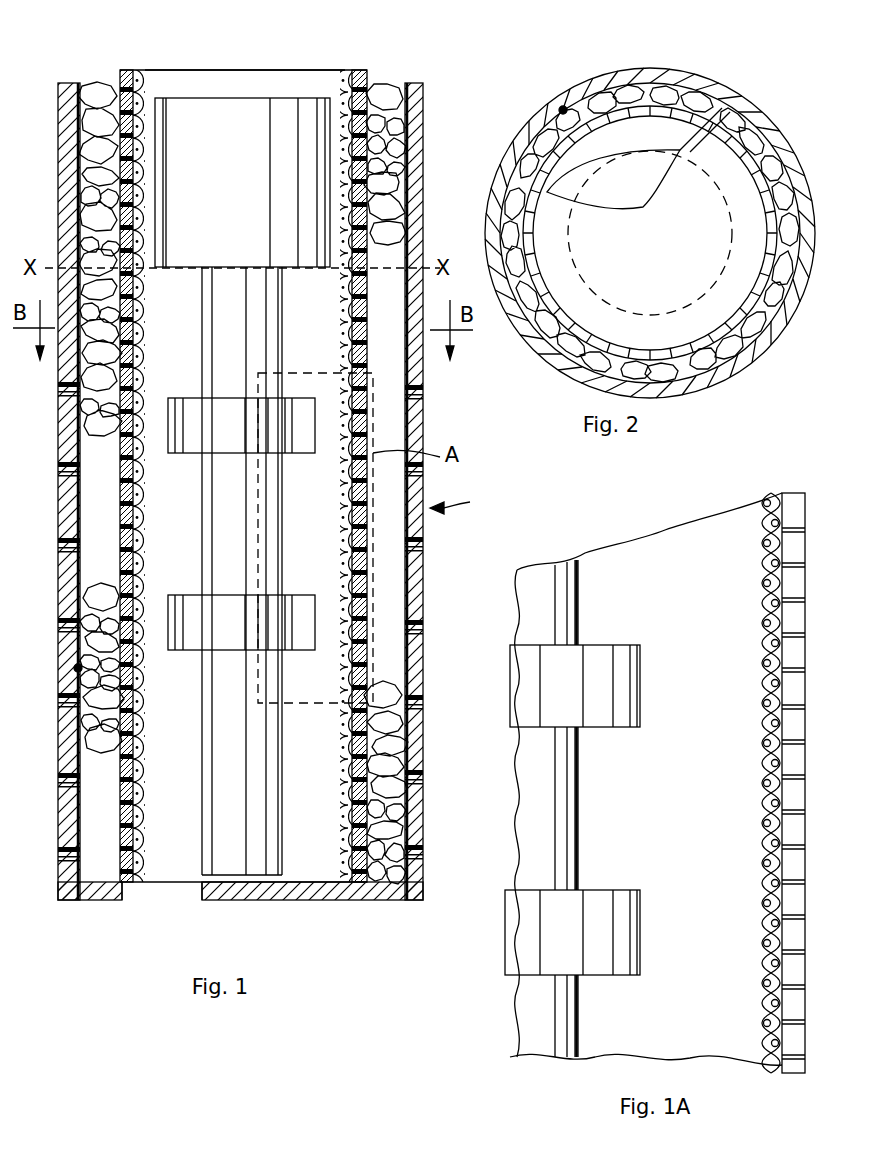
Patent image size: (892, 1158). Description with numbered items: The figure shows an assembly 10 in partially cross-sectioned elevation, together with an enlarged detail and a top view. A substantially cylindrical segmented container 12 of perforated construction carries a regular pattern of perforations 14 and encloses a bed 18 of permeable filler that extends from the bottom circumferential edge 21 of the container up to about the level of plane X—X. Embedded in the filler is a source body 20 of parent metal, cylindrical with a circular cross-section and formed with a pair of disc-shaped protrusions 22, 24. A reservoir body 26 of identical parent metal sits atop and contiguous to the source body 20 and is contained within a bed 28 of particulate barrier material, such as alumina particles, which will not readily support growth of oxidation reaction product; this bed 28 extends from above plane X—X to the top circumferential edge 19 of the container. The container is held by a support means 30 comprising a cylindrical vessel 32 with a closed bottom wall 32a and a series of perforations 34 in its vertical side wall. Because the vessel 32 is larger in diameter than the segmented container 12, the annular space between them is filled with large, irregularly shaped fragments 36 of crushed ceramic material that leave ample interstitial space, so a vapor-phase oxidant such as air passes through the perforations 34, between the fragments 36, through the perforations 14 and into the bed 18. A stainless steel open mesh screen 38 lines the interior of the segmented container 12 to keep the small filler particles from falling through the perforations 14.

In FIG. 1, the assembly 10 is at (462, 502).
In FIG. 1, the segmented container 12 is at (368, 345).
In FIG. 1A, the segmented container 12 is at (797, 728).
In FIG. 2, the segmented container 12 is at (648, 92).
In FIG. 1, the perforations 14 is at (362, 577).
In FIG. 1A, the perforations 14 is at (797, 812).
In FIG. 1, the bed of permeable filler 18 is at (165, 476).
In FIG. 1A, the bed of permeable filler 18 is at (636, 806).
In FIG. 1, the top circumferential edge 19 is at (222, 70).
In FIG. 1, the source body of parent metal 20 is at (212, 378).
In FIG. 1A, the source body of parent metal 20 is at (545, 800).
In FIG. 1, the bottom circumferential edge 21 is at (170, 884).
In FIG. 1, the disc-shaped protrusion 22 is at (205, 430).
In FIG. 1A, the disc-shaped protrusion 22 is at (570, 692).
In FIG. 1, the disc-shaped protrusion 24 is at (197, 635).
In FIG. 1A, the disc-shaped protrusion 24 is at (550, 942).
In FIG. 1, the reservoir body 26 is at (285, 110).
In FIG. 2, the reservoir body 26 is at (638, 158).
In FIG. 1, the bed of particulate barrier material 28 is at (240, 84).
In FIG. 2, the bed of particulate barrier material 28 is at (735, 318).
In FIG. 1, the support means 30 is at (76, 669).
In FIG. 2, the support means 30 is at (563, 108).
In FIG. 1, the cylindrical vessel 32 is at (420, 660).
In FIG. 2, the cylindrical vessel 32 is at (695, 385).
In FIG. 1, the closed bottom wall 32a is at (305, 893).
In FIG. 1, the perforations 34 is at (56, 860).
In FIG. 1, the fragments of crushed ceramic material 36 is at (83, 630).
In FIG. 2, the fragments of crushed ceramic material 36 is at (562, 348).
In FIG. 1, the open mesh screen 38 is at (135, 500).
In FIG. 1A, the open mesh screen 38 is at (760, 770).